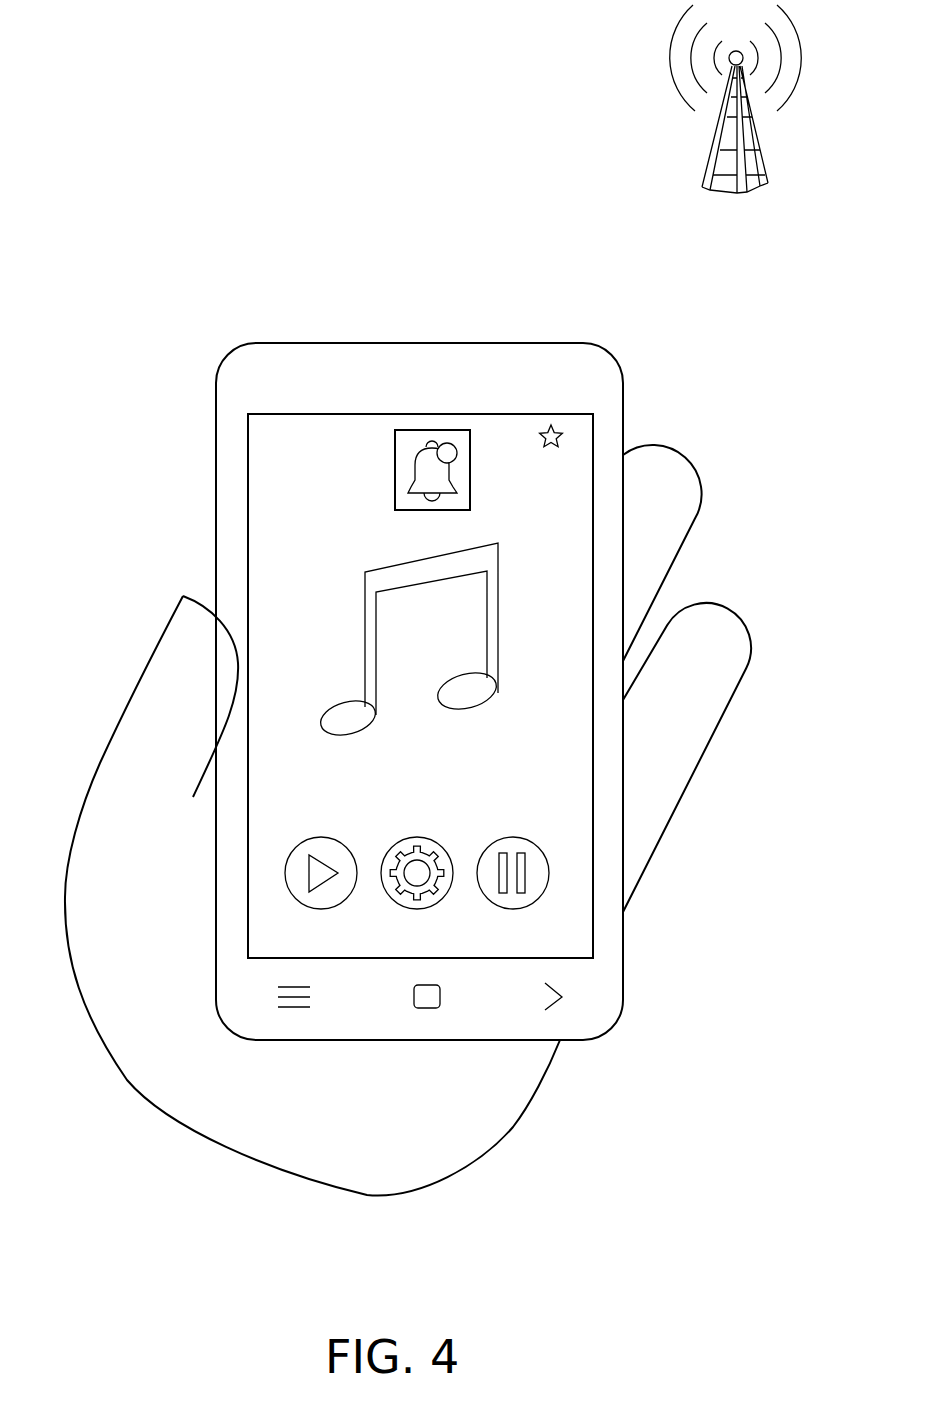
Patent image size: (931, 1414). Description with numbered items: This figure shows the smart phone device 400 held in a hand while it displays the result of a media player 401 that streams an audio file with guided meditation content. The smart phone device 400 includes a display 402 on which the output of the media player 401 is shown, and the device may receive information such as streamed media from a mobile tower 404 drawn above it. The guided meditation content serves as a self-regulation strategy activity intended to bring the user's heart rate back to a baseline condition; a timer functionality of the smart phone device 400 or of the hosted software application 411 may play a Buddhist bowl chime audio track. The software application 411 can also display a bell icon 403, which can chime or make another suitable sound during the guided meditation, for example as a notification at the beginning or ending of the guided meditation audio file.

The smart phone device 400 is at (565, 1040).
The media player 401 is at (443, 800).
The display 402 is at (570, 833).
The bell icon 403 is at (395, 463).
The mobile tower 404 is at (655, 106).
The hosted software application 411 is at (562, 433).